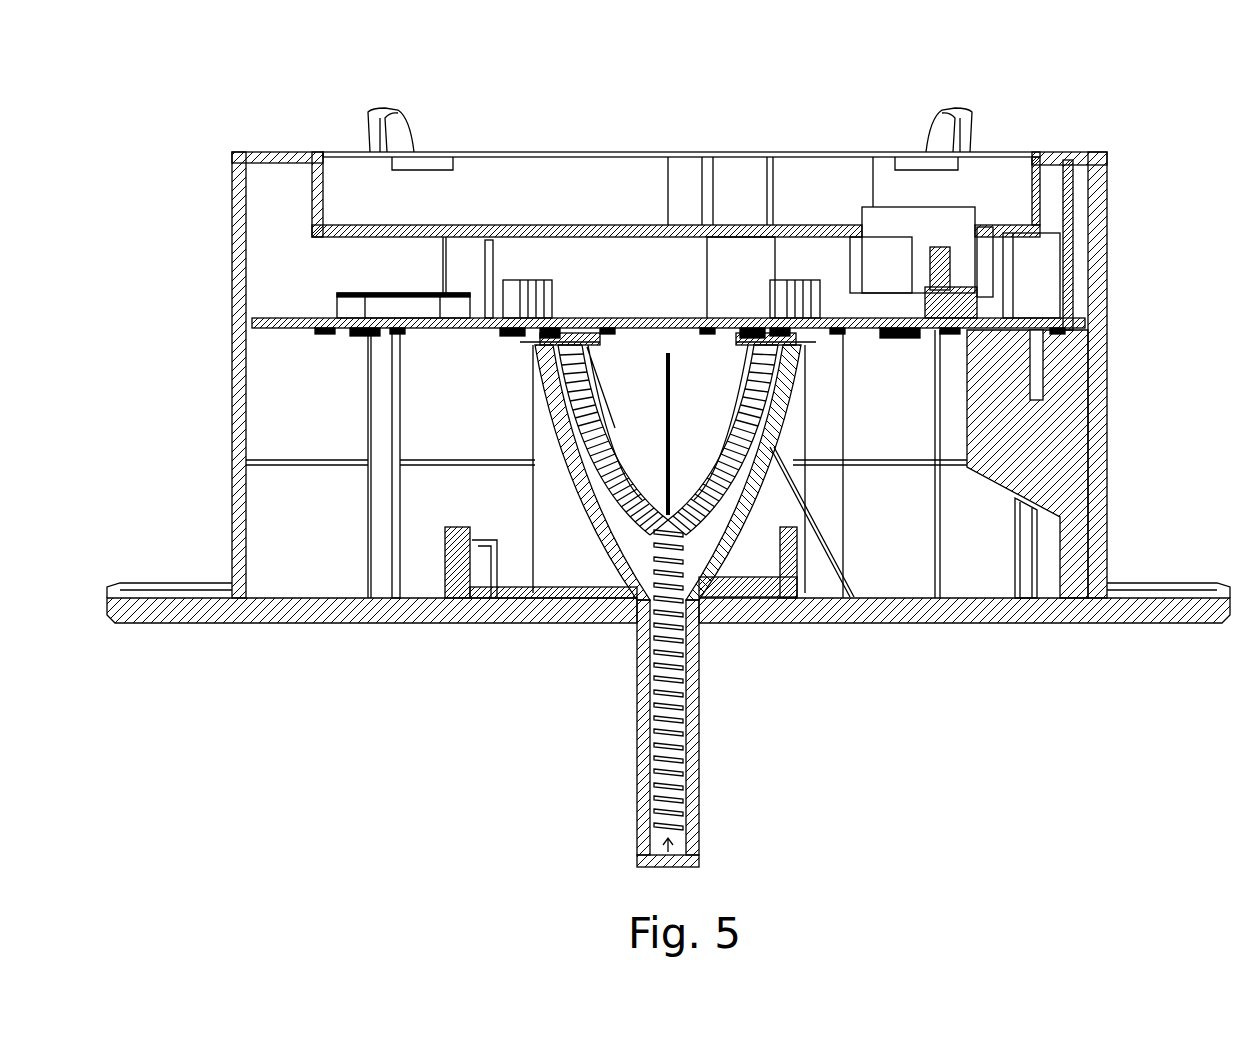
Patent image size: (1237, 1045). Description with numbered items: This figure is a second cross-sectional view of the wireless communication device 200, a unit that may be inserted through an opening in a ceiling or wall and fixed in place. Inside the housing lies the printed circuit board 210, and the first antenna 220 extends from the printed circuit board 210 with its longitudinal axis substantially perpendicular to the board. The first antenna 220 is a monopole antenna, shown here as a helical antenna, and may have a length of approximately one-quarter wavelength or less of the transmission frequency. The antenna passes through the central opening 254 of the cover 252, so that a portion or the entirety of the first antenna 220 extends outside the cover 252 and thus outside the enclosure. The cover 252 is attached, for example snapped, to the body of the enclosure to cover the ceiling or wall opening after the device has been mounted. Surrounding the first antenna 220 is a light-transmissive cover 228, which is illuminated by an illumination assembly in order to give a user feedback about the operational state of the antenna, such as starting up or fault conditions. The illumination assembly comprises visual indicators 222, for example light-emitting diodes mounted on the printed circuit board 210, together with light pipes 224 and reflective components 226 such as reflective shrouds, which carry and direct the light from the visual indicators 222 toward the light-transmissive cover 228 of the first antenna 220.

The wireless communication device 200 is at (660, 99).
The printed circuit board 210 is at (252, 325).
The first antenna 220 is at (668, 852).
The visual indicators 222 is at (582, 320).
The light pipes 224 is at (630, 520).
The reflective components 226 is at (572, 462).
The light-transmissive cover 228 is at (641, 773).
The cover 252 is at (143, 613).
The central opening 254 is at (630, 628).